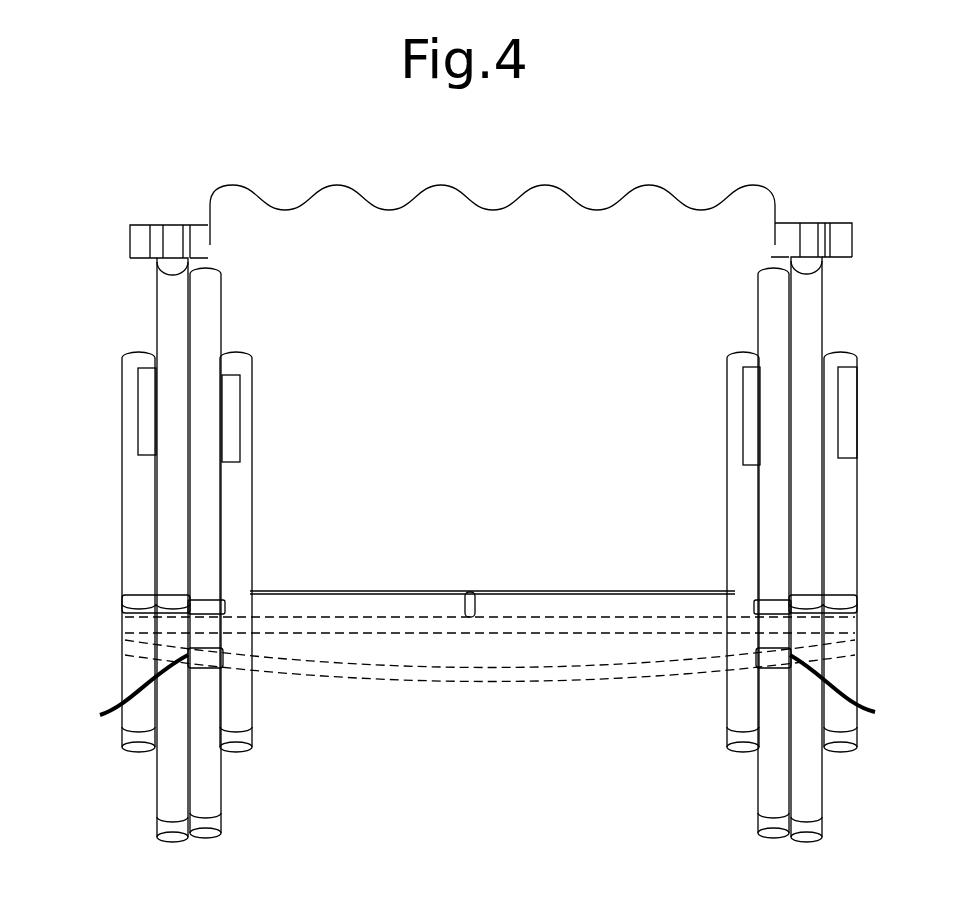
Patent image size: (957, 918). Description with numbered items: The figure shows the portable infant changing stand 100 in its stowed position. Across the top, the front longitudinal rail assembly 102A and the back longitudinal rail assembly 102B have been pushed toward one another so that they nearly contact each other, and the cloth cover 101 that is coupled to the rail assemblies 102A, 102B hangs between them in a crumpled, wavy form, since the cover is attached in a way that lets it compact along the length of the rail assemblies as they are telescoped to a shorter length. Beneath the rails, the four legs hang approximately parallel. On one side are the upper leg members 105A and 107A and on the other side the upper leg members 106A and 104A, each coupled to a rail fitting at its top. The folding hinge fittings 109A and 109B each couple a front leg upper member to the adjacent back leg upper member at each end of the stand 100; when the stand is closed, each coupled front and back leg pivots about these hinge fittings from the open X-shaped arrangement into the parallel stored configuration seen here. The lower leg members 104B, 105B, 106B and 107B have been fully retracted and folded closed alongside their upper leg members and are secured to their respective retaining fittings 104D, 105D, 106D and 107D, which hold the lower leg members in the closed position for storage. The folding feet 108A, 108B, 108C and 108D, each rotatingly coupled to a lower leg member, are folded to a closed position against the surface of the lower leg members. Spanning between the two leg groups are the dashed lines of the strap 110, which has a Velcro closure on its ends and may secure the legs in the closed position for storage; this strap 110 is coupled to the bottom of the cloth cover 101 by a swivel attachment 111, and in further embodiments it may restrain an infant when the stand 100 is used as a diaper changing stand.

The stand 100 is at (142, 143).
The cloth cover 101 is at (318, 213).
The front longitudinal rail assembly 102A is at (198, 243).
The back longitudinal rail assembly 102B is at (140, 243).
The upper leg member 104A is at (810, 305).
The lower leg member 104B is at (850, 523).
The retaining fitting 104D is at (850, 605).
The upper leg member 105A is at (168, 305).
The lower leg member 105B is at (133, 505).
The retaining fitting 105D is at (138, 595).
The upper leg member 106A is at (760, 318).
The lower leg member 106B is at (732, 540).
The retaining fitting 106D is at (735, 606).
The upper leg member 107A is at (205, 333).
The lower leg member 107B is at (242, 548).
The retaining fitting 107D is at (250, 603).
The folding foot 108A is at (850, 412).
The folding foot 108B is at (127, 415).
The folding foot 108C is at (745, 412).
The folding foot 108D is at (230, 425).
The folding hinge fitting 109A is at (859, 694).
The folding hinge fitting 109B is at (118, 693).
The strap 110 is at (485, 678).
The swivel attachment 111 is at (468, 592).